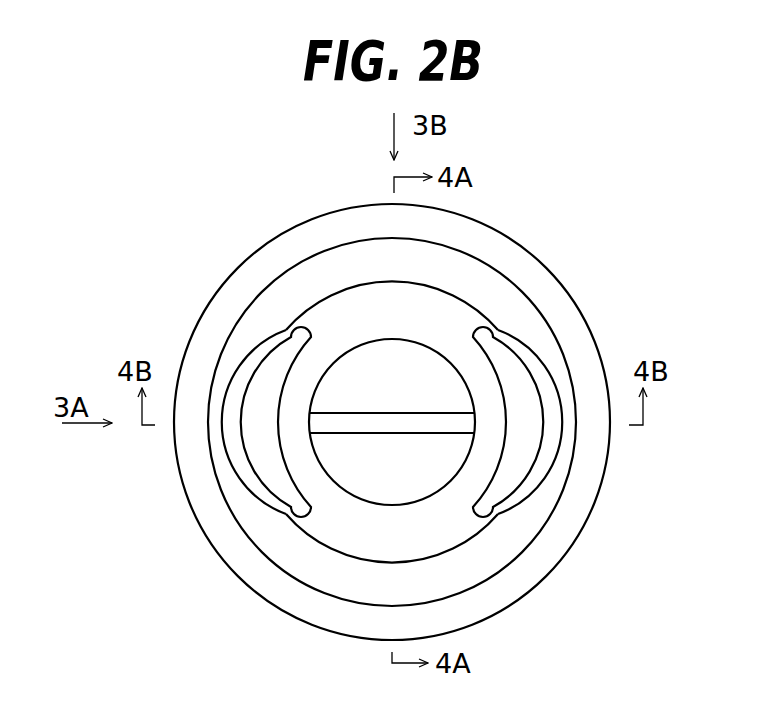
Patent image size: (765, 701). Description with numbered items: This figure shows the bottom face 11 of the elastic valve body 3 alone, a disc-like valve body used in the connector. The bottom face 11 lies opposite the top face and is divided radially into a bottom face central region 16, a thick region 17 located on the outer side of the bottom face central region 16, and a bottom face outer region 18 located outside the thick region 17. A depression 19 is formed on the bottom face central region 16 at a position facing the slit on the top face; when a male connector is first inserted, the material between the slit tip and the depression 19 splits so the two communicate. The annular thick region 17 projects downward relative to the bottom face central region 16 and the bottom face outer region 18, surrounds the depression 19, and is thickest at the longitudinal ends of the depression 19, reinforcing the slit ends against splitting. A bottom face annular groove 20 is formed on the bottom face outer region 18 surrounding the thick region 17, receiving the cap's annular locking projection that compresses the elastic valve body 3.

The elastic valve body 3 is at (231, 247).
The bottom face 11 is at (657, 247).
The bottom face central region 16 is at (450, 333).
The thick region 17 is at (537, 296).
The bottom face outer region 18 is at (392, 365).
The depression 19 is at (370, 428).
The bottom face annular groove 20 is at (278, 543).